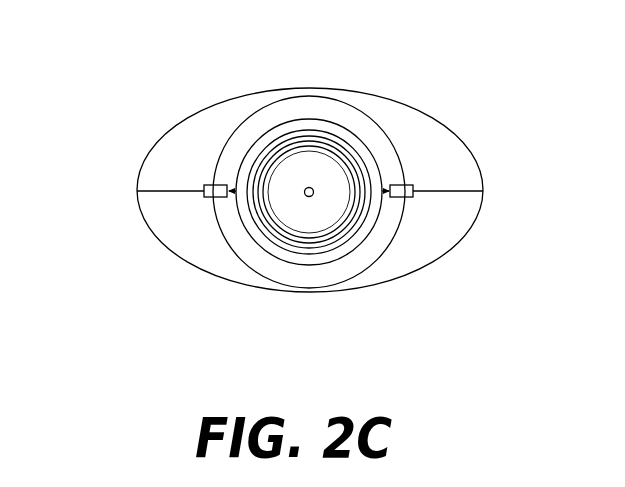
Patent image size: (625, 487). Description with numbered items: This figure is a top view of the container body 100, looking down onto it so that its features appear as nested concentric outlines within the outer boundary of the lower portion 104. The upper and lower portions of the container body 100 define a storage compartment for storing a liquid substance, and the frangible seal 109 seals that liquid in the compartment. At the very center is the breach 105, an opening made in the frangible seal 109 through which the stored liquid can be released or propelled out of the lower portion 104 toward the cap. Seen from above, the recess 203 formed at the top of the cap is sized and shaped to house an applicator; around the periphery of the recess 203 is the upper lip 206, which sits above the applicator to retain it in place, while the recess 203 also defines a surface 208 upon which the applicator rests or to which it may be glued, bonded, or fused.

The container body 100 is at (477, 243).
The lower portion 104 is at (167, 233).
The breach 105 is at (312, 187).
The frangible seal 109 is at (294, 214).
The recess 203 is at (362, 142).
The upper lip 206 is at (347, 220).
The surface 208 is at (260, 143).